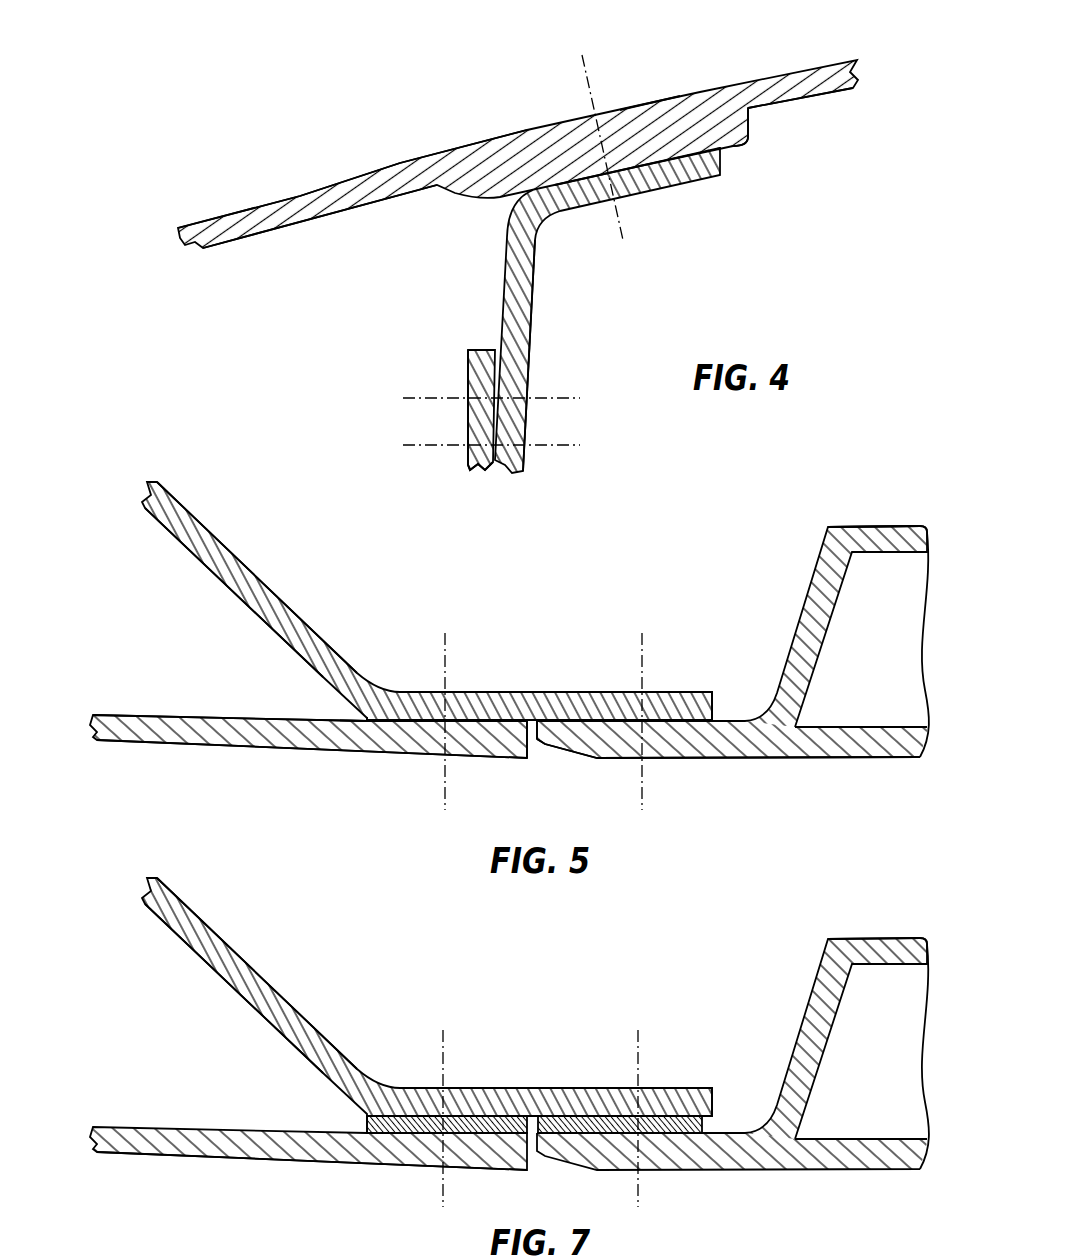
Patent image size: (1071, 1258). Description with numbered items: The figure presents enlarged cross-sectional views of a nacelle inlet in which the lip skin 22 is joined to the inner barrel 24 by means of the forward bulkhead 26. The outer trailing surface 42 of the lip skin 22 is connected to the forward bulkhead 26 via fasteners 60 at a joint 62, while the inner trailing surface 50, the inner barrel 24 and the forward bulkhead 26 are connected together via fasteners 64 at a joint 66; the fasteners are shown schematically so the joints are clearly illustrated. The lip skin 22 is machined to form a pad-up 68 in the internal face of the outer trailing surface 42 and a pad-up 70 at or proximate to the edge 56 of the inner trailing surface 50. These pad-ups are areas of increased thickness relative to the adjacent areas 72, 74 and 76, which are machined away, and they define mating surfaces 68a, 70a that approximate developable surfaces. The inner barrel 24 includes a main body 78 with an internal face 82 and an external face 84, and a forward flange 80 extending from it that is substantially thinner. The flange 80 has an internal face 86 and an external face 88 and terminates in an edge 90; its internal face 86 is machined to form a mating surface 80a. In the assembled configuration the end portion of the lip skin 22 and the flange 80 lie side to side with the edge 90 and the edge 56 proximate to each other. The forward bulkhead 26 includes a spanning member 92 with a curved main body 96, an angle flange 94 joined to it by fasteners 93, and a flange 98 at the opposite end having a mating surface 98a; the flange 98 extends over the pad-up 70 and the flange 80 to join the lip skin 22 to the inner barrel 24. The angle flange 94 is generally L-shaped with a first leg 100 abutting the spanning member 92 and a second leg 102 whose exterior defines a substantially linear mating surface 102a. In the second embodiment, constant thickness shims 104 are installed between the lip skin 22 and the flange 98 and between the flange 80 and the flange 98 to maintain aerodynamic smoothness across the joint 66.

In FIG. 4, the lip skin 22 is at (255, 196).
In FIG. 5, the lip skin 22 is at (148, 750).
In FIG. 7, the lip skin 22 is at (148, 1162).
In FIG. 5, the inner barrel 24 is at (797, 578).
In FIG. 7, the inner barrel 24 is at (797, 981).
In FIG. 4, the forward bulkhead 26 is at (467, 342).
In FIG. 5, the forward bulkhead 26 is at (192, 495).
In FIG. 7, the forward bulkhead 26 is at (185, 966).
In FIG. 4, the outer trailing surface 42 is at (316, 195).
In FIG. 5, the inner trailing surface 50 is at (258, 745).
In FIG. 7, the inner trailing surface 50 is at (258, 1160).
In FIG. 5, the edge 56 is at (527, 758).
In FIG. 4, the fasteners 60 is at (590, 97).
In FIG. 4, the joint 62 is at (729, 61).
In FIG. 5, the fasteners 64 is at (444, 667).
In FIG. 7, the fasteners 64 is at (441, 1054).
In FIG. 5, the joint 66 is at (583, 609).
In FIG. 4, the pad-up 68 is at (727, 127).
In FIG. 4, the mating surface 68a is at (648, 135).
In FIG. 5, the pad-up 70 is at (362, 718).
In FIG. 7, the pad-up 70 is at (427, 1158).
In FIG. 5, the mating surface 70a is at (422, 722).
In FIG. 7, the mating surface 70a is at (397, 1137).
In FIG. 4, the adjacent area 72 is at (366, 205).
In FIG. 4, the adjacent area 74 is at (815, 98).
In FIG. 5, the adjacent area 76 is at (266, 717).
In FIG. 5, the main body 78 is at (853, 530).
In FIG. 7, the main body 78 is at (880, 935).
In FIG. 5, the forward flange 80 is at (700, 741).
In FIG. 7, the forward flange 80 is at (707, 1153).
In FIG. 5, the mating surface 80a is at (677, 724).
In FIG. 7, the mating surface 80a is at (663, 1137).
In FIG. 5, the internal face 82 is at (896, 521).
In FIG. 5, the external face 84 is at (877, 758).
In FIG. 5, the internal face 86 is at (731, 718).
In FIG. 5, the external face 88 is at (762, 758).
In FIG. 5, the edge 90 is at (539, 746).
In FIG. 4, the spanning member 92 is at (462, 461).
In FIG. 5, the spanning member 92 is at (302, 616).
In FIG. 7, the spanning member 92 is at (300, 1012).
In FIG. 4, the fasteners 93 is at (562, 400).
In FIG. 4, the angle flange 94 is at (532, 298).
In FIG. 4, the curved main body 96 is at (478, 420).
In FIG. 5, the curved main body 96 is at (233, 573).
In FIG. 7, the curved main body 96 is at (233, 968).
In FIG. 5, the flange 98 is at (498, 703).
In FIG. 7, the flange 98 is at (517, 1100).
In FIG. 5, the mating surface 98a is at (539, 741).
In FIG. 4, the first leg 100 is at (513, 358).
In FIG. 4, the second leg 102 is at (698, 180).
In FIG. 4, the mating surface 102a is at (637, 170).
In FIG. 7, the shims 104 is at (363, 1126).